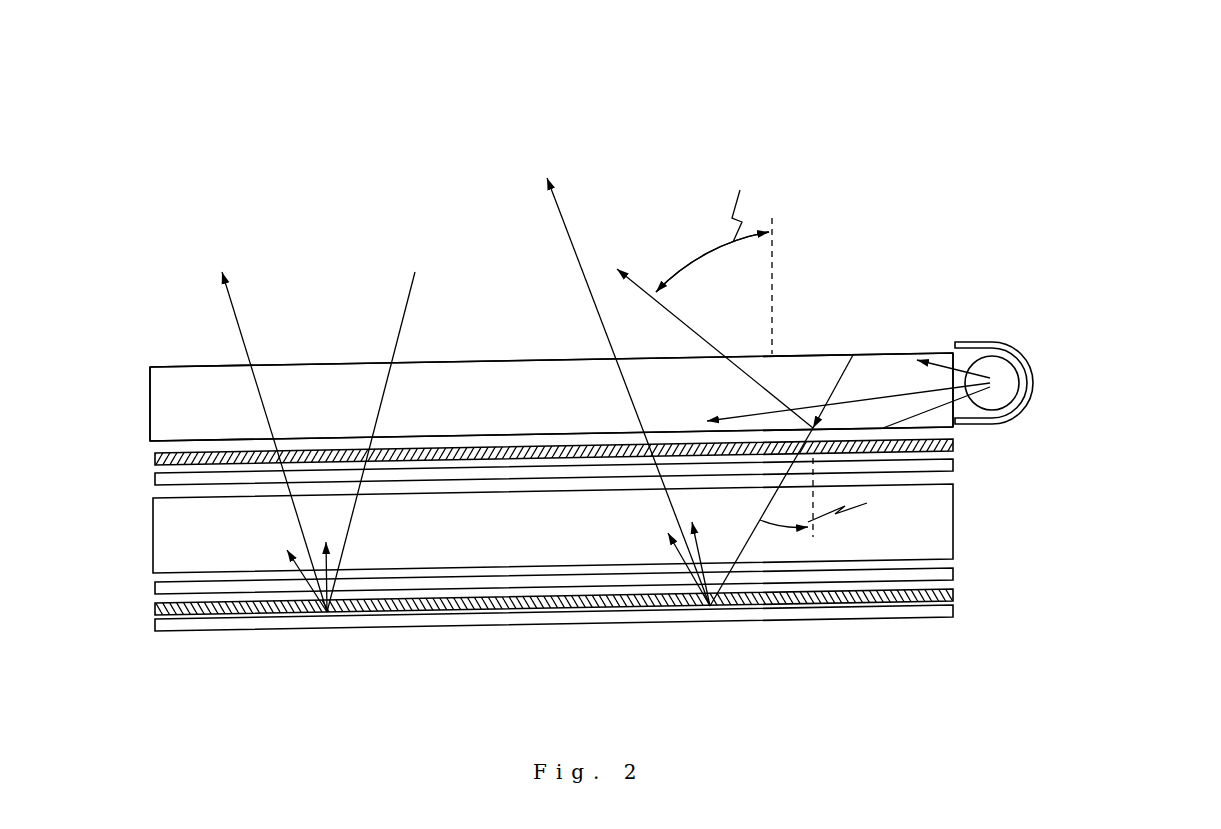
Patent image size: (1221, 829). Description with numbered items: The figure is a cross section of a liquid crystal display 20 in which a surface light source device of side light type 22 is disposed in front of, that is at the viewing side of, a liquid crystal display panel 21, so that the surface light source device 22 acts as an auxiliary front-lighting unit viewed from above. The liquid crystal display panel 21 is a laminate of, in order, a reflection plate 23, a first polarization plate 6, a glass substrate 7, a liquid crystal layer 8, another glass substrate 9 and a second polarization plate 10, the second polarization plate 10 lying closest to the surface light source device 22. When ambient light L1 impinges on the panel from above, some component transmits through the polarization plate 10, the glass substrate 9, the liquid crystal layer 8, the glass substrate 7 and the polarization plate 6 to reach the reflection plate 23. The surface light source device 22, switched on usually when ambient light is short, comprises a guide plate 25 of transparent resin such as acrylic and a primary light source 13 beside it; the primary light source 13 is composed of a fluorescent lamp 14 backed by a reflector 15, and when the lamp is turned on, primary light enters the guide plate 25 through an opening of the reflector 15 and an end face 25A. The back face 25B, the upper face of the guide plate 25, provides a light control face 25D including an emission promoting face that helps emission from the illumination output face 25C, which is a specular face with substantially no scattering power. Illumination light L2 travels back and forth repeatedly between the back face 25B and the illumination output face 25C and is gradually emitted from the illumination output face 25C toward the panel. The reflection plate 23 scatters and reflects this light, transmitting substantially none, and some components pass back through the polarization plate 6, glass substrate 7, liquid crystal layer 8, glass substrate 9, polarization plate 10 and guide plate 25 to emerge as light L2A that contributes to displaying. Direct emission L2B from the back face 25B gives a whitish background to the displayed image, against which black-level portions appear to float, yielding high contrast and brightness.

The liquid crystal display 20 is at (196, 107).
The liquid crystal display panel 21 is at (505, 563).
The surface light source device of side light type 22 is at (649, 375).
The primary light source 13 is at (1016, 344).
The fluorescent lamp 14 is at (1021, 412).
The reflector 15 is at (1011, 355).
The guide plate 25 is at (551, 356).
The end face 25A is at (927, 349).
The back face 25B is at (551, 319).
The illumination output face 25C is at (144, 352).
The light control face 25D is at (551, 356).
The second polarization plate 10 is at (505, 442).
The glass substrate 9 is at (510, 472).
The liquid crystal layer 8 is at (510, 528).
The glass substrate 7 is at (510, 579).
The first polarization plate 6 is at (510, 609).
The reflection plate 23 is at (509, 636).
The ambient light L1 is at (318, 441).
The illumination light L2 is at (848, 459).
The light contributing to displaying L2A is at (628, 391).
The direct emission L2B is at (715, 348).